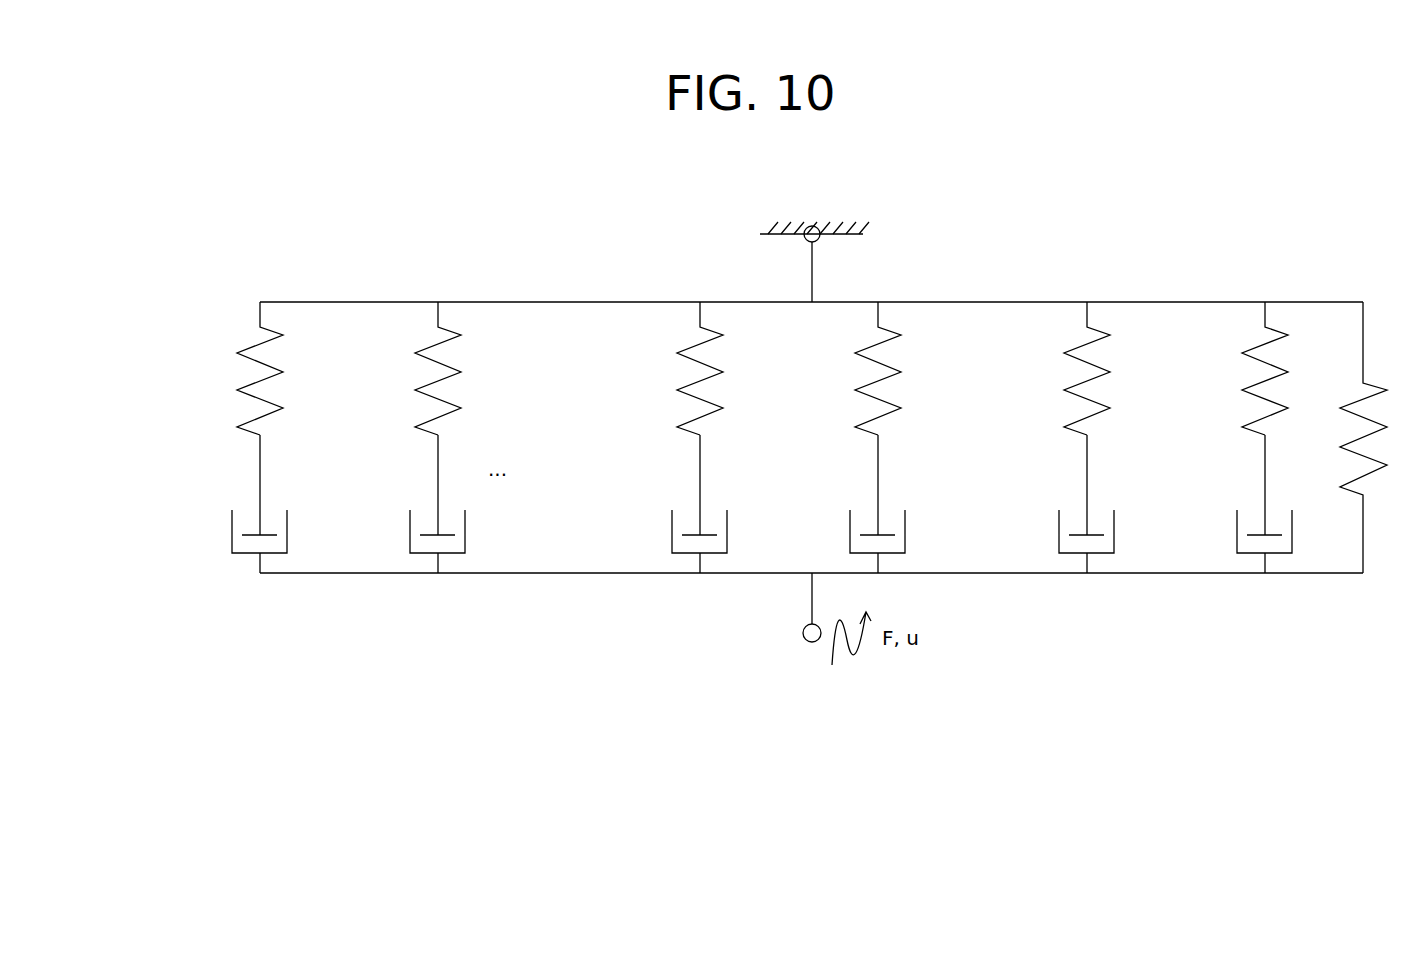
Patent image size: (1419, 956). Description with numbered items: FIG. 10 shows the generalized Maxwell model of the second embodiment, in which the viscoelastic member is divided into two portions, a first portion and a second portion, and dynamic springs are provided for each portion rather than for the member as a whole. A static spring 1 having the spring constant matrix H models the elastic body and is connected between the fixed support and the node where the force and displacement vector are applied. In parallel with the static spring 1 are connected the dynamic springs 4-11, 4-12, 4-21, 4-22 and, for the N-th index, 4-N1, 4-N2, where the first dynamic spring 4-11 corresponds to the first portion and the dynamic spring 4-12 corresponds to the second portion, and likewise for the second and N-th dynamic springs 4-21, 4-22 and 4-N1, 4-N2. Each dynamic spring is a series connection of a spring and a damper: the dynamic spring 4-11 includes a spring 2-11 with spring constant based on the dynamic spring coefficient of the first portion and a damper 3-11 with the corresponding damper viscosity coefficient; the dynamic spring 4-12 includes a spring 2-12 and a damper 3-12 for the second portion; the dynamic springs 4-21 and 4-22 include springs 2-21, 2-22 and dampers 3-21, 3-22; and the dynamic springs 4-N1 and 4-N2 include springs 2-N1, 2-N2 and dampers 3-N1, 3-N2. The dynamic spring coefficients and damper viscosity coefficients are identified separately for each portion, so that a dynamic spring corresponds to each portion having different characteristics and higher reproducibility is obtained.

The static spring 1 is at (1360, 433).
The spring 2-N2 is at (224, 379).
The spring 2-N1 is at (402, 379).
The spring 2-22 is at (664, 379).
The spring 2-21 is at (842, 379).
The spring 2-12 is at (1051, 379).
The spring 2-11 is at (1229, 379).
The damper 3-N2 is at (226, 504).
The damper 3-N1 is at (404, 504).
The damper 3-22 is at (666, 504).
The damper 3-21 is at (844, 504).
The damper 3-12 is at (1053, 504).
The damper 3-11 is at (1231, 504).
The dynamic spring 4-N2 is at (191, 437).
The dynamic spring 4-N1 is at (369, 437).
The dynamic spring 4-22 is at (631, 437).
The dynamic spring 4-21 is at (809, 437).
The dynamic spring 4-12 is at (1018, 437).
The dynamic spring 4-11 is at (1196, 437).